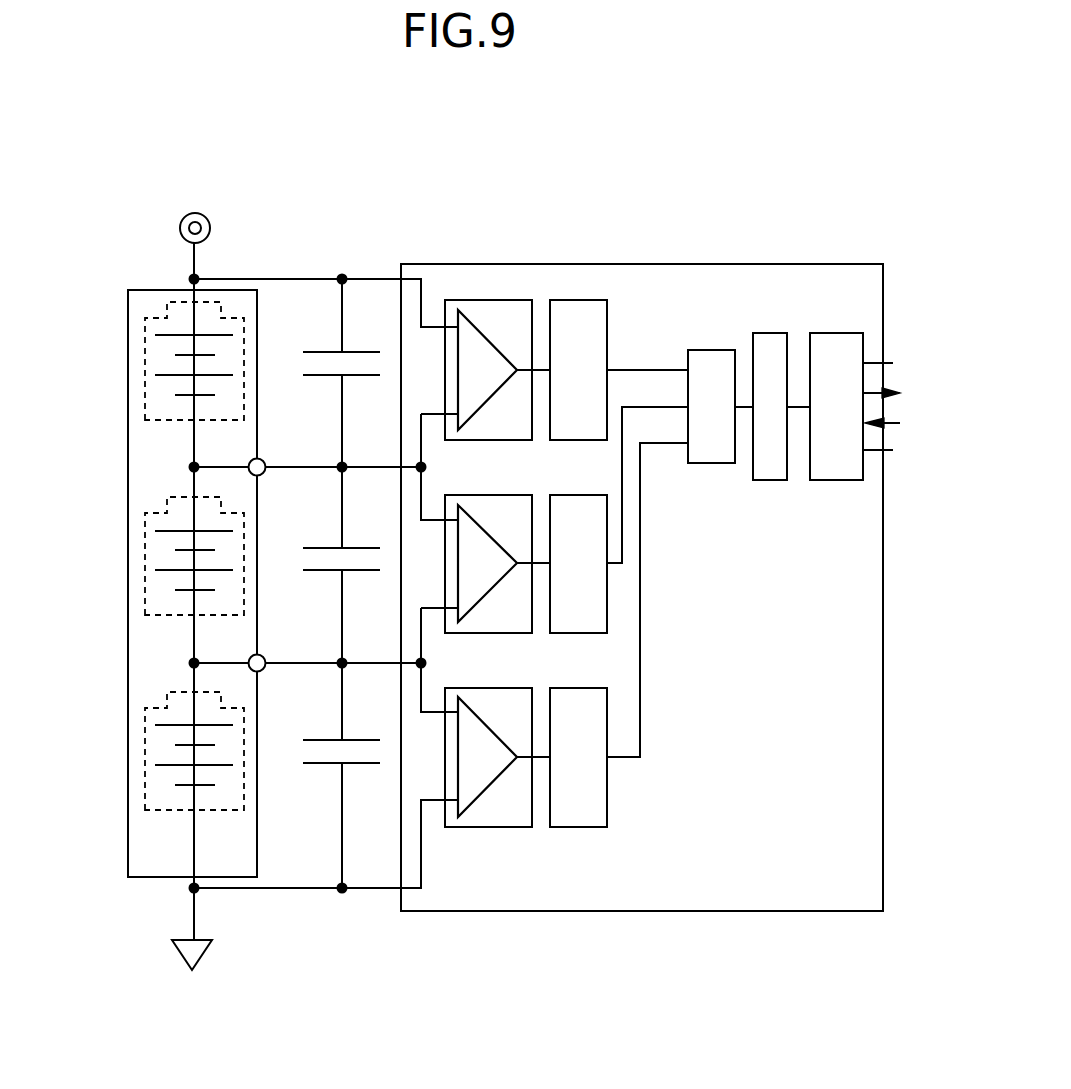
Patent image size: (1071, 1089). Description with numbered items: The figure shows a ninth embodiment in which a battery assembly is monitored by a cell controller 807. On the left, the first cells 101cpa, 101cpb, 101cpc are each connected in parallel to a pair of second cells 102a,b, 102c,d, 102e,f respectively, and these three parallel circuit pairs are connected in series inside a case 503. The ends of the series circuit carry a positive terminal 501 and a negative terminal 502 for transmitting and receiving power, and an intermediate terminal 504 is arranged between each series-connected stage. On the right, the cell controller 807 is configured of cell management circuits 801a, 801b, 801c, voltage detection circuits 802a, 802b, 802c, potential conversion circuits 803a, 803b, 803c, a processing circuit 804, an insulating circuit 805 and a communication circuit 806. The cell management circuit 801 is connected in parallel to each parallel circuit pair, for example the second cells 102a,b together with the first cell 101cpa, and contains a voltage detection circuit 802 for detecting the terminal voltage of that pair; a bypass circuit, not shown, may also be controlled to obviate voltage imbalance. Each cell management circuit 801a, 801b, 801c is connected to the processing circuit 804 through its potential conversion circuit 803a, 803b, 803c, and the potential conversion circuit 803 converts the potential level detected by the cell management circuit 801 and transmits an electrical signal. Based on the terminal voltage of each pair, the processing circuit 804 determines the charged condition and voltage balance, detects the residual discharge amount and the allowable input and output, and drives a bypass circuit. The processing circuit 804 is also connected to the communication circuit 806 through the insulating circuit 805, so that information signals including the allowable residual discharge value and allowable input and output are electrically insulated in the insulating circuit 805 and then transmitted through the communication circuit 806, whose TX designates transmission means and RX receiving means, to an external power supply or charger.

The positive terminal 501 is at (210, 228).
The negative terminal 502 is at (207, 953).
The case 503 is at (257, 835).
The intermediate terminal 504 is at (263, 459).
The first cell 101cpa is at (320, 351).
The first cell 101cpb is at (320, 547).
The first cell 101cpc is at (320, 739).
The second cells 102a,b is at (156, 421).
The second cells 102c,d is at (156, 616).
The second cells 102e,f is at (156, 811).
The cell management circuit 801 is at (641, 489).
The cell management circuit 801a is at (453, 300).
The cell management circuit 801b is at (479, 495).
The cell management circuit 801c is at (453, 688).
The voltage detection circuit 802 is at (684, 544).
The voltage detection circuit 802a is at (485, 335).
The voltage detection circuit 802b is at (485, 598).
The voltage detection circuit 802c is at (493, 785).
The potential conversion circuit 803 is at (721, 523).
The potential conversion circuit 803a is at (562, 300).
The potential conversion circuit 803b is at (566, 495).
The potential conversion circuit 803c is at (558, 688).
The processing circuit 804 is at (707, 350).
The insulating circuit 805 is at (767, 480).
The communication circuit 806 is at (847, 480).
The cell controller 807 is at (428, 912).